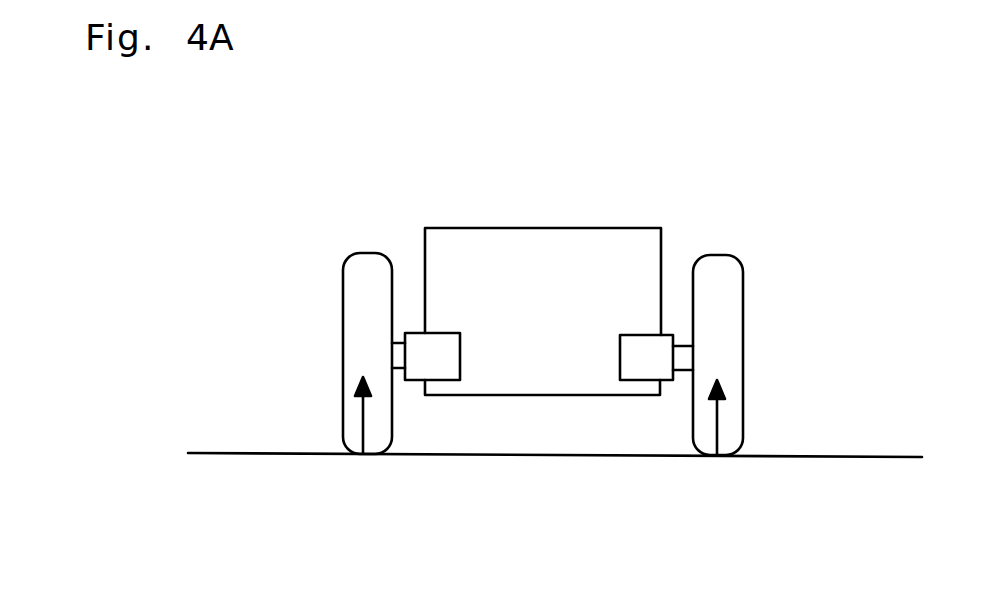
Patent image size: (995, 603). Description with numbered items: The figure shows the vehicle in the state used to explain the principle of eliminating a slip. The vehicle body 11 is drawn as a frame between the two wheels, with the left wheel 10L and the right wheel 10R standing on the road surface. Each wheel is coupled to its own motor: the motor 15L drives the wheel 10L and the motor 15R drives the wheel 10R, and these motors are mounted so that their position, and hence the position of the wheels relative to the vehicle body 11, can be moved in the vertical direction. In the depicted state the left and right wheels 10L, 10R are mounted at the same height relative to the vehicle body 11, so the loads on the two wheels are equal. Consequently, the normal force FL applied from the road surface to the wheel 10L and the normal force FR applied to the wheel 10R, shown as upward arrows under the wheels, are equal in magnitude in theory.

The vehicle body 11 is at (543, 233).
The right wheel 10R is at (360, 257).
The left wheel 10L is at (738, 325).
The right motor 15R is at (439, 370).
The left motor 15L is at (647, 375).
The normal force on right wheel FR is at (362, 418).
The normal force on left wheel FL is at (717, 415).